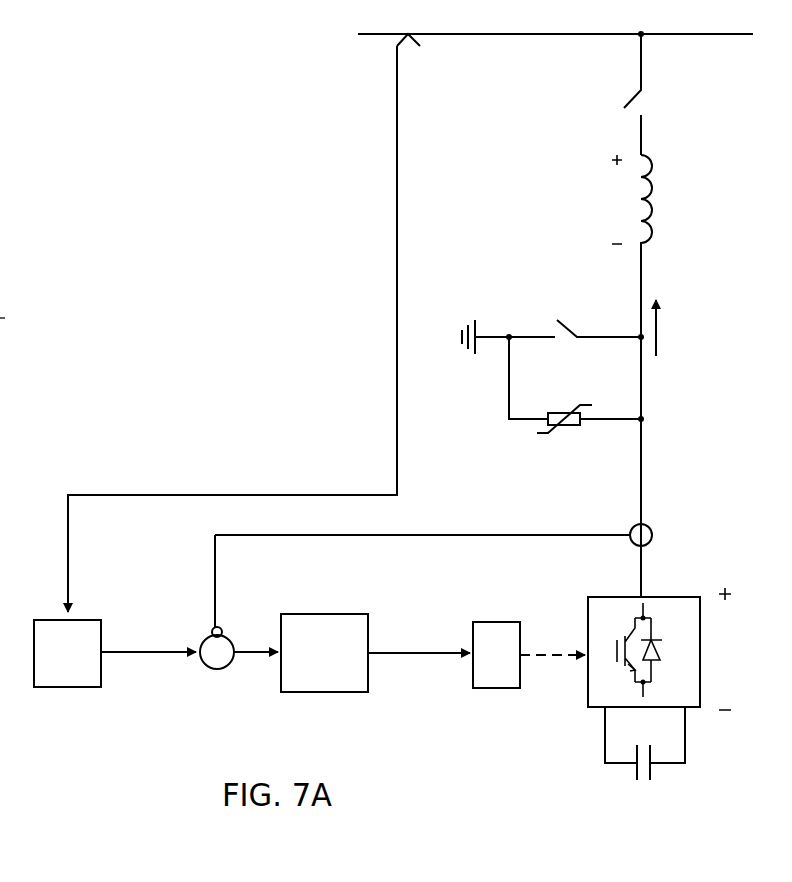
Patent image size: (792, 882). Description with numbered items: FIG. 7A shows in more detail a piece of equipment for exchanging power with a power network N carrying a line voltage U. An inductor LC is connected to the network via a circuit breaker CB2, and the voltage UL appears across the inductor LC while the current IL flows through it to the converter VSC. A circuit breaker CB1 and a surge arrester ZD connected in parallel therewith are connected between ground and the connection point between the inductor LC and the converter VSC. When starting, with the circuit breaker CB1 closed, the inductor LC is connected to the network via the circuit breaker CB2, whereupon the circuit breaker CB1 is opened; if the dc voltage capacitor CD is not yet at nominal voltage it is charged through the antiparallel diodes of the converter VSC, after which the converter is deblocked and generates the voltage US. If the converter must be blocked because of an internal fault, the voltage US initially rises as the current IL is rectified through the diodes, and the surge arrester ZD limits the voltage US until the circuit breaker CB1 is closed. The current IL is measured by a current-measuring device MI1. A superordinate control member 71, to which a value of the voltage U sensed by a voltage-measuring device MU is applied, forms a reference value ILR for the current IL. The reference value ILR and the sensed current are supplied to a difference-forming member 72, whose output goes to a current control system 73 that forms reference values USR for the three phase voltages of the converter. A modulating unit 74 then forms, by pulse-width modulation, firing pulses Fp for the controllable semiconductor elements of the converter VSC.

The line voltage U is at (693, 24).
The electrical network N is at (586, 37).
The voltage-measuring device MU is at (408, 60).
The circuit breaker CB2 is at (645, 100).
The inductor LC is at (655, 203).
The voltage across the inductor UL is at (615, 199).
The circuit breaker CB1 is at (568, 310).
The current through the inductor IL is at (450, 463).
The surge arrester ZD is at (567, 437).
The current-measuring device MI1 is at (653, 533).
The reference value for the current ILR is at (98, 479).
The superordinate control member 71 is at (70, 688).
The difference-forming member 72 is at (212, 670).
The current control system 73 is at (320, 693).
The modulating unit 74 is at (497, 690).
The reference values for the phase voltages USR is at (419, 640).
The firing pulses Fp is at (552, 640).
The converter VSC is at (587, 705).
The voltage generated by the converter US is at (727, 649).
The dc voltage capacitor CD is at (655, 777).